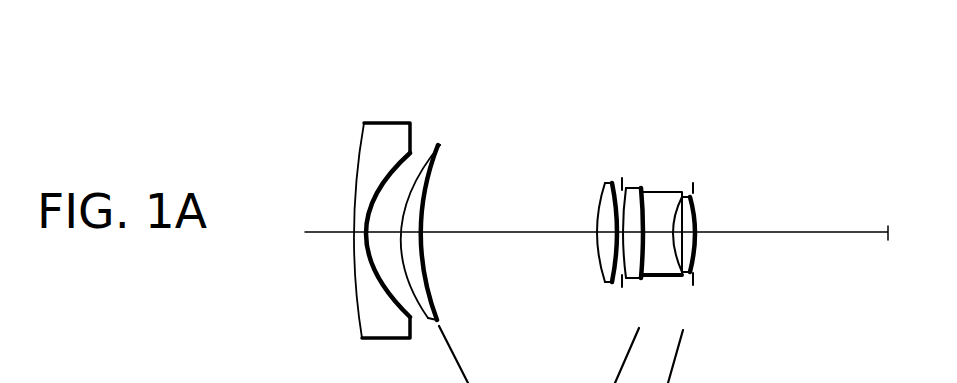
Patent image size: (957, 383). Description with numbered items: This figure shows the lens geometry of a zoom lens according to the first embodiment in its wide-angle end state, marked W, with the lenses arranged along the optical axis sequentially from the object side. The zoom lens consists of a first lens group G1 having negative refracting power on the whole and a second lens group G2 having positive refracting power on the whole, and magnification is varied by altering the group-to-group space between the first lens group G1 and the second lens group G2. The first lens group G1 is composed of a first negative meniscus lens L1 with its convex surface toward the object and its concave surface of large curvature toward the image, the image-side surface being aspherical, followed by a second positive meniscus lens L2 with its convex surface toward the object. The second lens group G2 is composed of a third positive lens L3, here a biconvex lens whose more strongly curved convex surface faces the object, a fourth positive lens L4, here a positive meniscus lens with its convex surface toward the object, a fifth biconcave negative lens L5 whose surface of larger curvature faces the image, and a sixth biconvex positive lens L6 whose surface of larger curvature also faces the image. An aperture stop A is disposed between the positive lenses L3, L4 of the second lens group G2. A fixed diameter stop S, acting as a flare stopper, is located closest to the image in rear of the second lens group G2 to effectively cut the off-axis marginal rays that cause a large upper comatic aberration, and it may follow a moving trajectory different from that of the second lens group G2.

The first lens group G1 is at (457, 60).
The second lens group G2 is at (713, 96).
The first negative meniscus lens L1 is at (395, 133).
The second positive meniscus lens L2 is at (433, 146).
The third positive lens L3 is at (604, 183).
The fourth positive lens L4 is at (640, 188).
The fifth biconcave negative lens L5 is at (656, 198).
The sixth biconvex positive lens L6 is at (693, 195).
The aperture stop A is at (622, 178).
The fixed diameter stop S is at (693, 186).
The wide-angle end position W is at (624, 231).